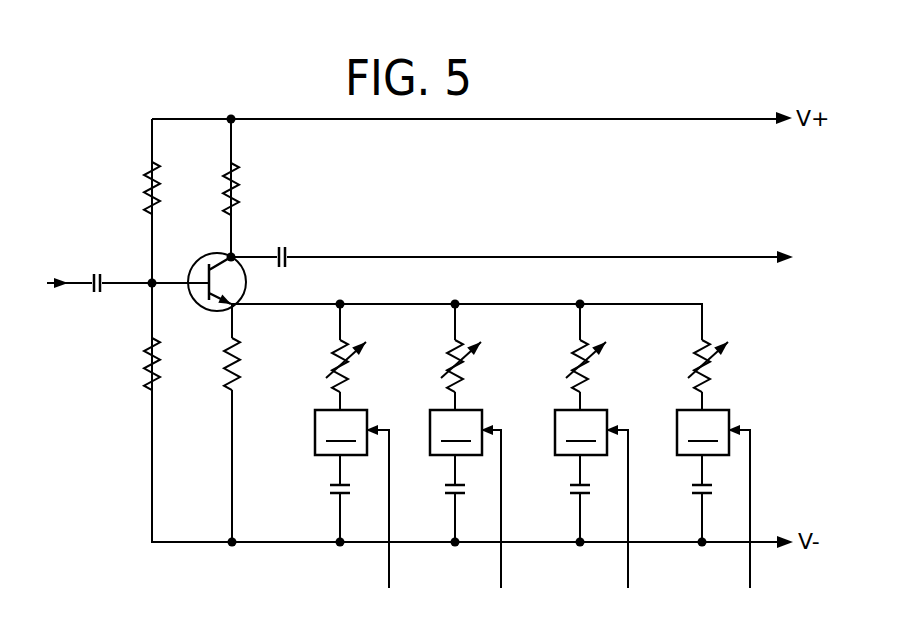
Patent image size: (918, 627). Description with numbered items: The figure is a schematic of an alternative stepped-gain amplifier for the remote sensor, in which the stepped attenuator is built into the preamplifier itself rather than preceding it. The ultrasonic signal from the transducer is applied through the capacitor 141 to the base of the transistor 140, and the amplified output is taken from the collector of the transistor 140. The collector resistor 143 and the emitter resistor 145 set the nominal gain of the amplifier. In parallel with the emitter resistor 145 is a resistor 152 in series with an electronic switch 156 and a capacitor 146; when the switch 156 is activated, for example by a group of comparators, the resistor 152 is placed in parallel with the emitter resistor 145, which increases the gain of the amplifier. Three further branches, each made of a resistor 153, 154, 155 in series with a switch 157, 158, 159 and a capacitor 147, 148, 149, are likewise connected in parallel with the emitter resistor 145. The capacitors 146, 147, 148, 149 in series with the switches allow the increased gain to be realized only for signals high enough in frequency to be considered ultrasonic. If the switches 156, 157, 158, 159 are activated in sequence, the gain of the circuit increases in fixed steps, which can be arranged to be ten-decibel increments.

The transistor 140 is at (218, 253).
The capacitor 141 is at (92, 272).
The resistor 143 is at (239, 180).
The emitter resistor 145 is at (230, 351).
The capacitor 146 is at (336, 494).
The capacitor 147 is at (451, 495).
The capacitor 148 is at (576, 495).
The capacitor 149 is at (698, 494).
The resistor 152 is at (336, 352).
The resistor 153 is at (450, 352).
The resistor 154 is at (576, 352).
The resistor 155 is at (698, 350).
The electronic switch 156 is at (341, 432).
The switch 157 is at (456, 432).
The switch 158 is at (581, 432).
The switch 159 is at (703, 432).